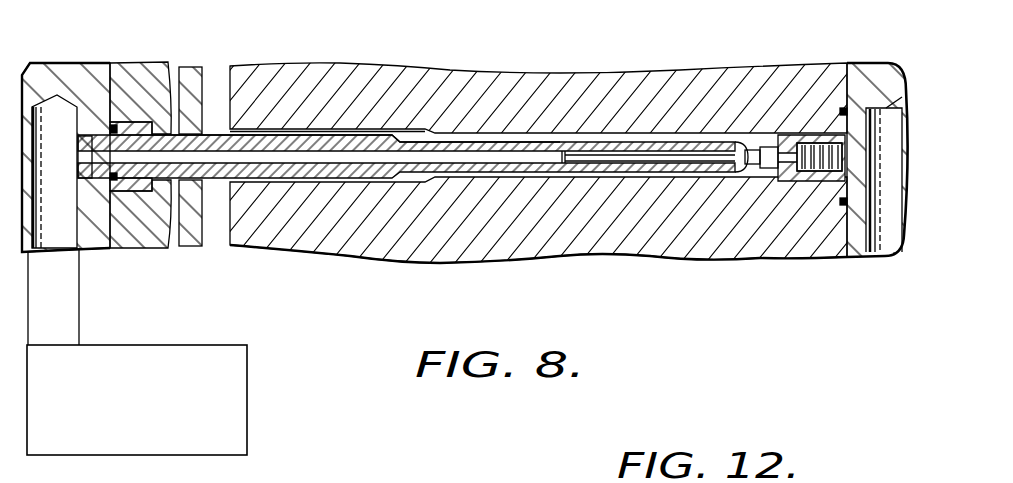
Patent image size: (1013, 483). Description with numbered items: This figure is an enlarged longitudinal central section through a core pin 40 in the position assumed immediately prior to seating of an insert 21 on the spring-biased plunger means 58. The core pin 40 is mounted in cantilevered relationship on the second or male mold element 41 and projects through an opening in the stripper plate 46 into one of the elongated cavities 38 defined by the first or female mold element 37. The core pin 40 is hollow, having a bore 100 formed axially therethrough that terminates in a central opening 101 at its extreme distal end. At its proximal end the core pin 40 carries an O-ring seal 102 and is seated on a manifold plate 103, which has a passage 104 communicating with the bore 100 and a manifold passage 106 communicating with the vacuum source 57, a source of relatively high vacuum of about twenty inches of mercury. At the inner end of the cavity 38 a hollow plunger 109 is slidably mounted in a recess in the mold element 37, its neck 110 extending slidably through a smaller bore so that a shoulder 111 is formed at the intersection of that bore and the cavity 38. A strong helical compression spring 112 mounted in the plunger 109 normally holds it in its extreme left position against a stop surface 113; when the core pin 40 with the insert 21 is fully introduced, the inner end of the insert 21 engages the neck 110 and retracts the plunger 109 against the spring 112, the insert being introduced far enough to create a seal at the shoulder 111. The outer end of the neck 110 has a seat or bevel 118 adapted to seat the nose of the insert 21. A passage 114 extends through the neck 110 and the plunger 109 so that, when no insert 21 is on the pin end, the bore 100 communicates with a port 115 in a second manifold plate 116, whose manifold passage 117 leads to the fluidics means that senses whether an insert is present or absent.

The insert 21 is at (748, 148).
The first (female) mold element 37 is at (557, 80).
The mold cavity 38 is at (465, 140).
The core pin 40 is at (353, 140).
The second (male) mold element 41 is at (135, 63).
The stripper plate 46 is at (195, 66).
The vacuum source 57 is at (244, 345).
The plunger means 58 is at (797, 182).
The bore 100 is at (272, 157).
The central opening 101 is at (730, 153).
The O-ring seal 102 is at (114, 180).
The manifold plate 103 is at (68, 62).
The passage 104 is at (90, 151).
The manifold passage 106 is at (65, 247).
The hollow plunger 109 is at (805, 182).
The neck 110 is at (784, 136).
The shoulder 111 is at (775, 150).
The helical compression spring 112 is at (828, 142).
The stop surface 113 is at (786, 146).
The passage 114 is at (782, 181).
The port 115 is at (860, 160).
The manifold plate 116 is at (848, 63).
The manifold passage 117 is at (889, 100).
The seat or bevel 118 is at (752, 172).